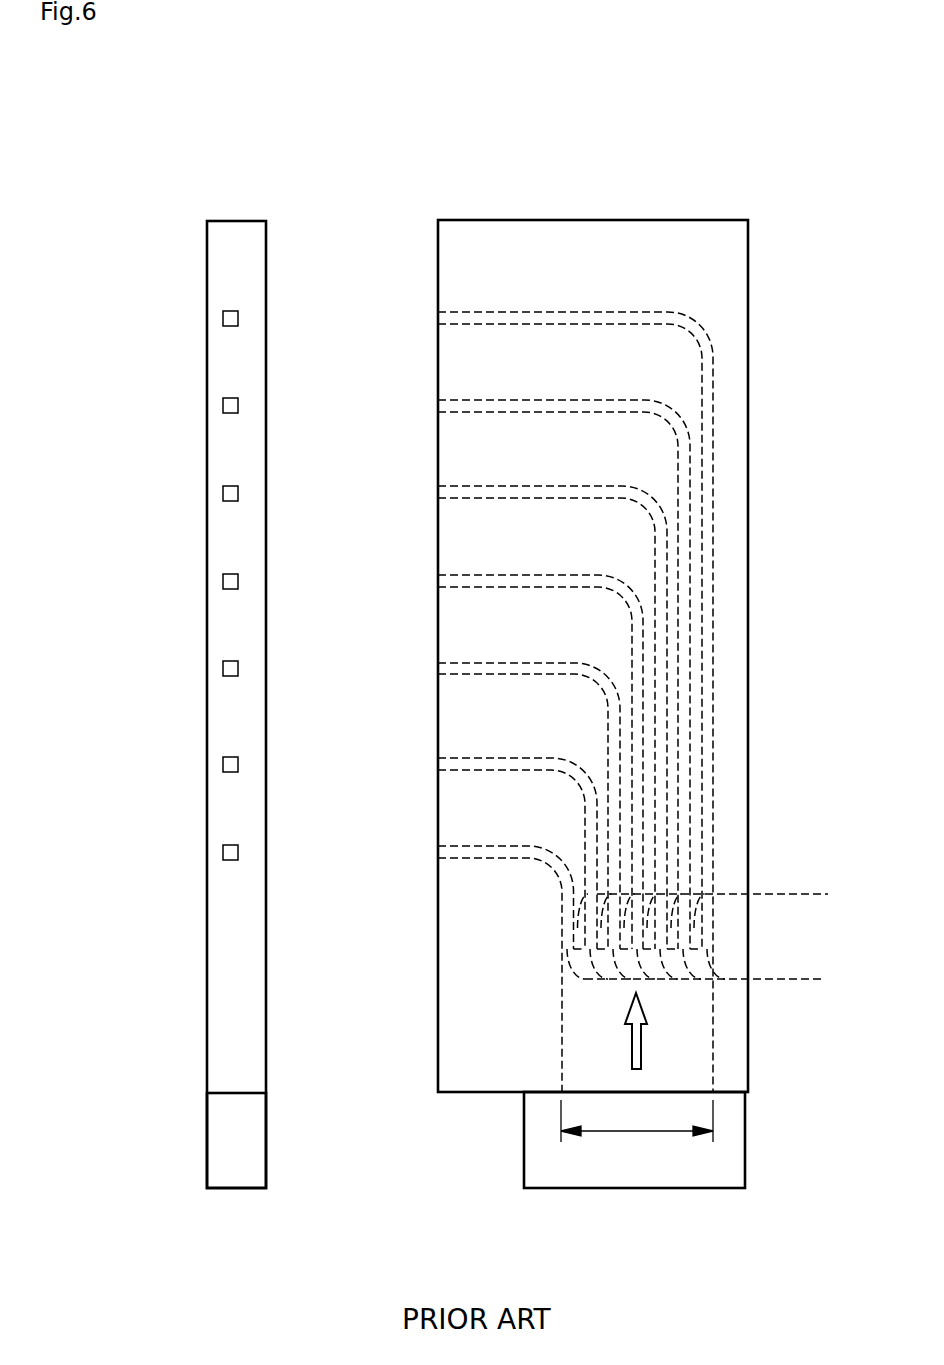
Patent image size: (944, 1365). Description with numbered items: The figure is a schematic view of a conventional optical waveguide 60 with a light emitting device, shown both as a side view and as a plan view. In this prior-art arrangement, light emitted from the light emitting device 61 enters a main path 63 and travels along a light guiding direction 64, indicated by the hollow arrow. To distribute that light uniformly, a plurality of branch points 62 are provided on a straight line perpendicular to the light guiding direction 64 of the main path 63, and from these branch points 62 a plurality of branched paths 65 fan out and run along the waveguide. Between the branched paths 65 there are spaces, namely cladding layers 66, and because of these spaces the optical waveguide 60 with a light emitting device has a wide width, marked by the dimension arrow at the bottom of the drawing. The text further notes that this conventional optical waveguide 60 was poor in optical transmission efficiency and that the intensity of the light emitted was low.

The optical waveguide with a light emitting device 60 is at (312, 180).
The light emitting device 61 is at (207, 1190).
The branch points 62 is at (711, 970).
The main path 63 is at (673, 1045).
The light guiding direction 64 is at (632, 1047).
The branched paths 65 is at (224, 311).
The spaces (cladding layers) 66 is at (721, 905).